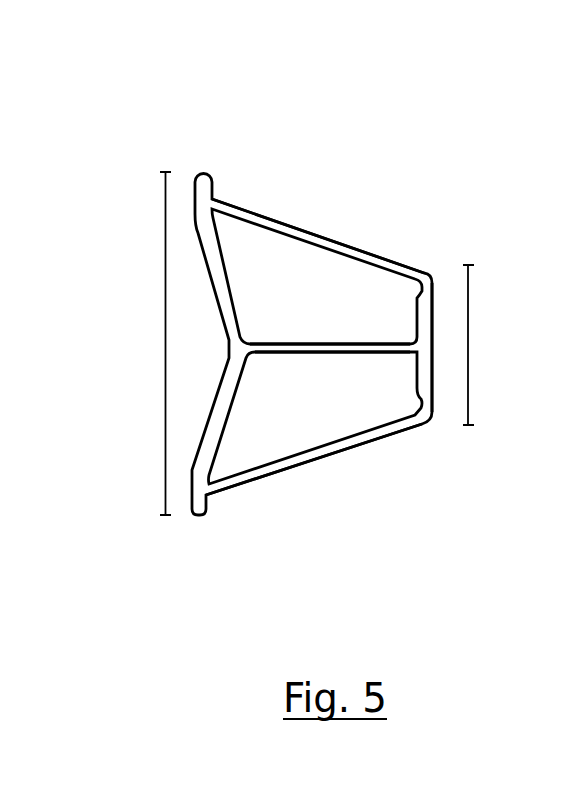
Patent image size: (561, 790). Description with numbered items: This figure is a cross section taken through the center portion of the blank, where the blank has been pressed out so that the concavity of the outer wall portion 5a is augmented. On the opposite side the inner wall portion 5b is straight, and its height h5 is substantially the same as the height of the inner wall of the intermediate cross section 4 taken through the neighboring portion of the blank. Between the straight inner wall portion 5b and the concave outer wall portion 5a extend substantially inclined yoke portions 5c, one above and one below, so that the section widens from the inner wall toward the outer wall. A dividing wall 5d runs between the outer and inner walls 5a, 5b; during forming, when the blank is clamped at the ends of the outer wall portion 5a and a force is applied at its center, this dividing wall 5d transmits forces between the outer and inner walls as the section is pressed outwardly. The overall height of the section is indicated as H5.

The outer wall portion 5a is at (192, 238).
The inner wall portion 5b is at (435, 309).
The inclined yoke portions 5c is at (336, 241).
The dividing wall 5d is at (292, 343).
The overall height of section H5 is at (134, 343).
The height of inner wall portion h5 is at (498, 345).
The intermediate cross section 4 is at (5, 410).